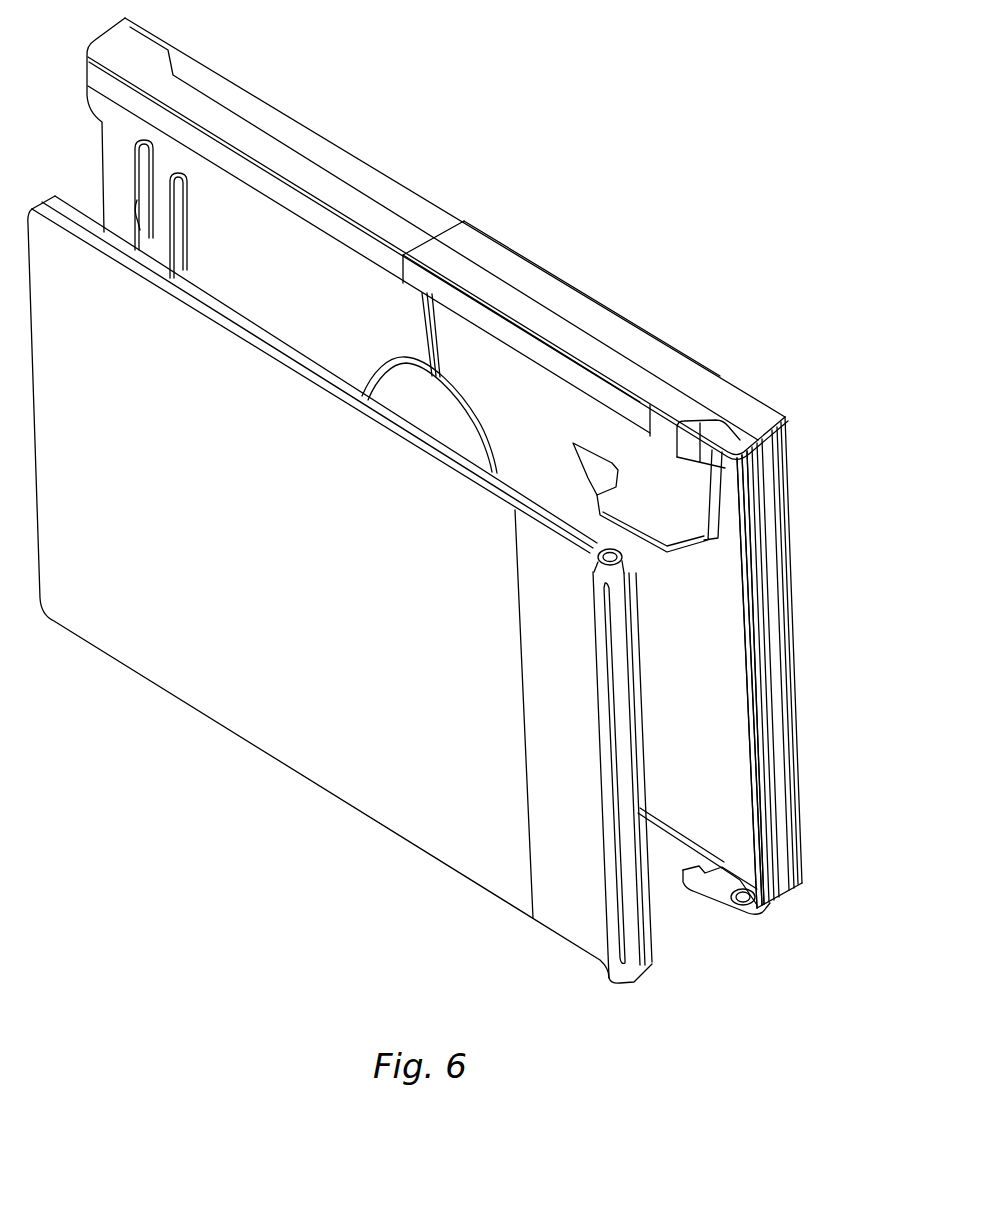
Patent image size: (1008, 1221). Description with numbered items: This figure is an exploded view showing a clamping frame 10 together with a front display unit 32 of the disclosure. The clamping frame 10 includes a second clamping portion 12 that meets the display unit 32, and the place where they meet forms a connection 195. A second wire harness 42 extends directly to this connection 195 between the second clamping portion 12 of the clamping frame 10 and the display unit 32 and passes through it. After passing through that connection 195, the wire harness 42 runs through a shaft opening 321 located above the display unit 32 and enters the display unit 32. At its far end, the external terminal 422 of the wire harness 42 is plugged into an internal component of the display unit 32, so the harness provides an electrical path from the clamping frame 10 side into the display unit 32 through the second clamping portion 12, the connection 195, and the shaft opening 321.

The clamping frame 10 is at (350, 133).
The second clamping portion 12 is at (518, 312).
The external terminal 422 is at (590, 467).
The connection 195 is at (728, 498).
The second wire harness 42 is at (738, 513).
The shaft opening 321 is at (625, 574).
The display unit 32 is at (322, 736).